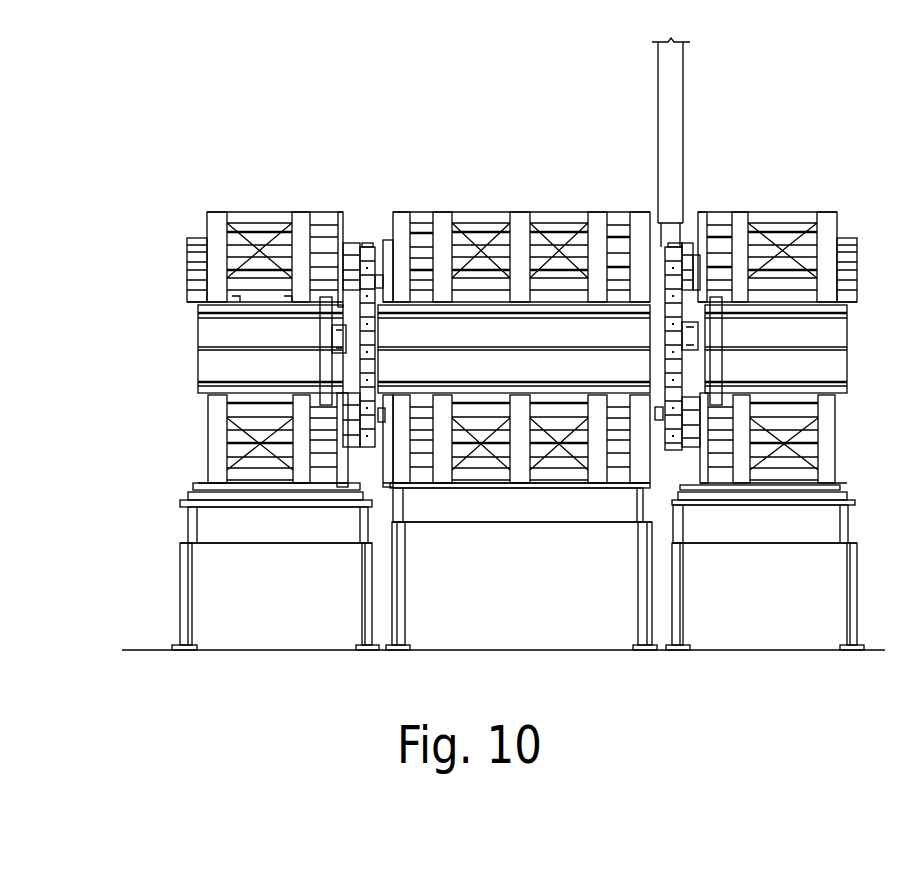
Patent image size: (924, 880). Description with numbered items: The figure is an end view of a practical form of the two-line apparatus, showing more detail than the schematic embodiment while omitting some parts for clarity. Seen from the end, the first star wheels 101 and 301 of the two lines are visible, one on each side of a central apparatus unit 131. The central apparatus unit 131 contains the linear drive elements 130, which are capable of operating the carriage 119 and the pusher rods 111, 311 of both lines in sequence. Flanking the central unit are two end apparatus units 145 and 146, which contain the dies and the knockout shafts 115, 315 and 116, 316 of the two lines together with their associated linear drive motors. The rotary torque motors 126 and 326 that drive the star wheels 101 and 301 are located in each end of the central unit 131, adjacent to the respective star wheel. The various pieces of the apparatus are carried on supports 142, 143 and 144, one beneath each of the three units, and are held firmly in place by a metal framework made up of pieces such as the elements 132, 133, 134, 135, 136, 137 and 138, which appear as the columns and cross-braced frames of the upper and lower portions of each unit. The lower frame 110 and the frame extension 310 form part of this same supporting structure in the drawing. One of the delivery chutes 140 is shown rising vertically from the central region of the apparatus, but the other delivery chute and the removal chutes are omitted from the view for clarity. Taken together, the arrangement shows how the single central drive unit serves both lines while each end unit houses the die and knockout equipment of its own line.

The first star wheel 101 is at (684, 245).
The lower roll frame 110 is at (777, 468).
The pusher rod 111 is at (652, 236).
The knockout shaft 115 is at (588, 470).
The knockout shaft 116 is at (723, 412).
The carriage 119 is at (618, 236).
The rotary torque motor 126 is at (690, 332).
The linear drive elements 130 is at (559, 212).
The central apparatus unit 131 is at (466, 192).
The framework element 132 is at (208, 222).
The framework element 133 is at (517, 213).
The framework element 134 is at (733, 222).
The framework element 135 is at (828, 230).
The framework element 136 is at (830, 428).
The framework element 137 is at (518, 472).
The framework element 138 is at (212, 415).
The delivery chute 140 is at (682, 125).
The support 142 is at (215, 530).
The support 143 is at (442, 505).
The support 144 is at (703, 533).
The end apparatus unit 145 is at (232, 178).
The end apparatus unit 146 is at (779, 132).
The first star wheel 301 is at (376, 243).
The lower roll frame 310 is at (230, 432).
The pusher rod 311 is at (387, 245).
The knockout shaft 315 is at (352, 452).
The knockout shaft 316 is at (325, 407).
The rotary torque motor 326 is at (340, 340).